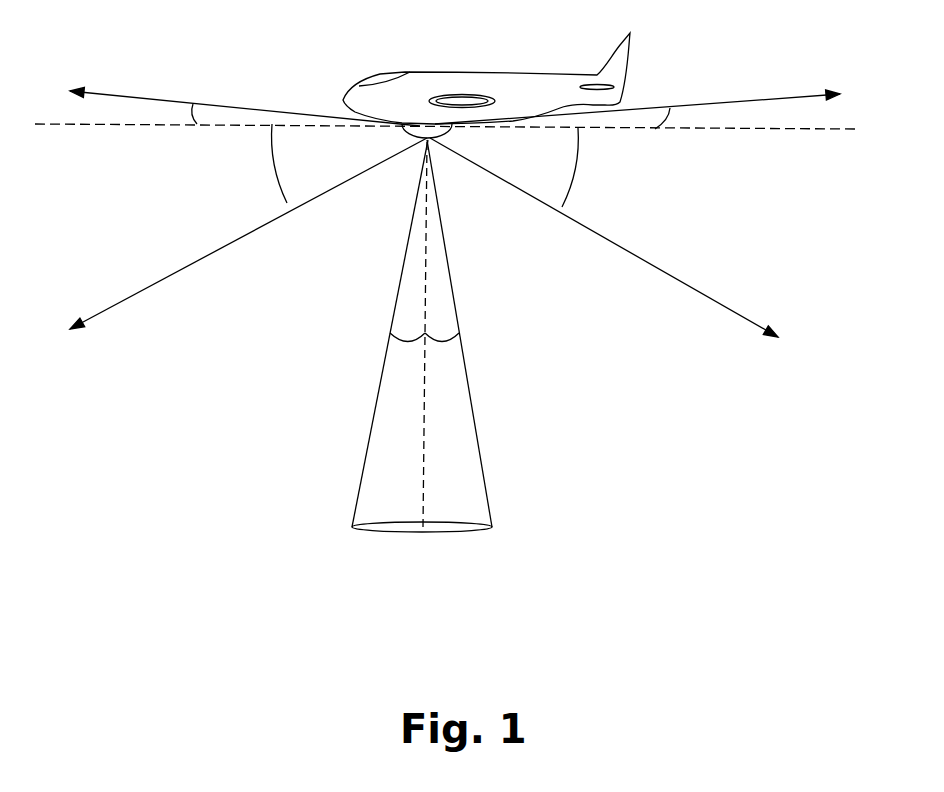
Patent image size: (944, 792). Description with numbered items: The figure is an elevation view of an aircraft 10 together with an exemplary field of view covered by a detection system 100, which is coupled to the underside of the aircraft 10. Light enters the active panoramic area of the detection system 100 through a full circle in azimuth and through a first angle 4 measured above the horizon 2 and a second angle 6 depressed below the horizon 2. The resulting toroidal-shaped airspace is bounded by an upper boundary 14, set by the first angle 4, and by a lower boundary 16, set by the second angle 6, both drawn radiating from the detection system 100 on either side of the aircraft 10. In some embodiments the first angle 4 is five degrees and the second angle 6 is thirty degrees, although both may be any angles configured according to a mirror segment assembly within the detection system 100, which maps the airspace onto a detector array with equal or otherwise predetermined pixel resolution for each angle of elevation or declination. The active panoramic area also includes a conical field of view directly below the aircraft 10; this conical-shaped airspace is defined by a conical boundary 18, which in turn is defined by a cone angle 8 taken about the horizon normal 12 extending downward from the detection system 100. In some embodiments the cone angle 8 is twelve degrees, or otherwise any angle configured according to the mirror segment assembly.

The aircraft 10 is at (470, 73).
The detection system 100 is at (438, 140).
The horizon 2 is at (142, 126).
The upper boundary 14 is at (118, 93).
The first angle 4 is at (190, 105).
The second angle 6 is at (270, 172).
The lower boundary 16 is at (175, 270).
The conical boundary 18 is at (372, 417).
The cone angle 8 is at (408, 343).
The horizon normal 12 is at (430, 530).